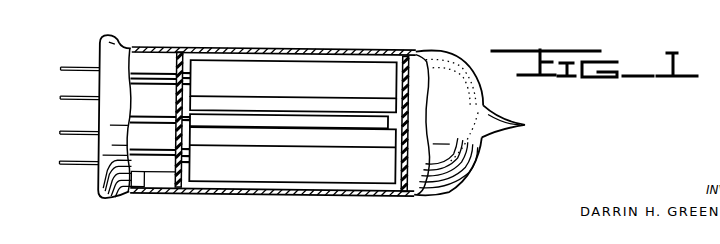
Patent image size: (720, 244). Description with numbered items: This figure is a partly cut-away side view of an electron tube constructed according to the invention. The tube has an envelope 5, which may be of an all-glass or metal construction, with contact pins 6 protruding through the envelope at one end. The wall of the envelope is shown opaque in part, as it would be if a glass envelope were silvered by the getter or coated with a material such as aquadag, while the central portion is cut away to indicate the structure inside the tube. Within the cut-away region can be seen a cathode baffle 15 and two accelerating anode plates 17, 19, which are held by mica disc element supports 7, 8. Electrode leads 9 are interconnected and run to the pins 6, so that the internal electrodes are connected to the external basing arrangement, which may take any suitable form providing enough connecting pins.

The envelope 5 is at (444, 68).
The contact pins 6 is at (60, 165).
The mica disc element support 7 is at (407, 193).
The mica disc element support 8 is at (176, 176).
The electrode leads 9 is at (146, 173).
The cathode baffle 15 is at (305, 122).
The accelerating anode plate 17 is at (233, 163).
The accelerating anode plate 19 is at (292, 68).